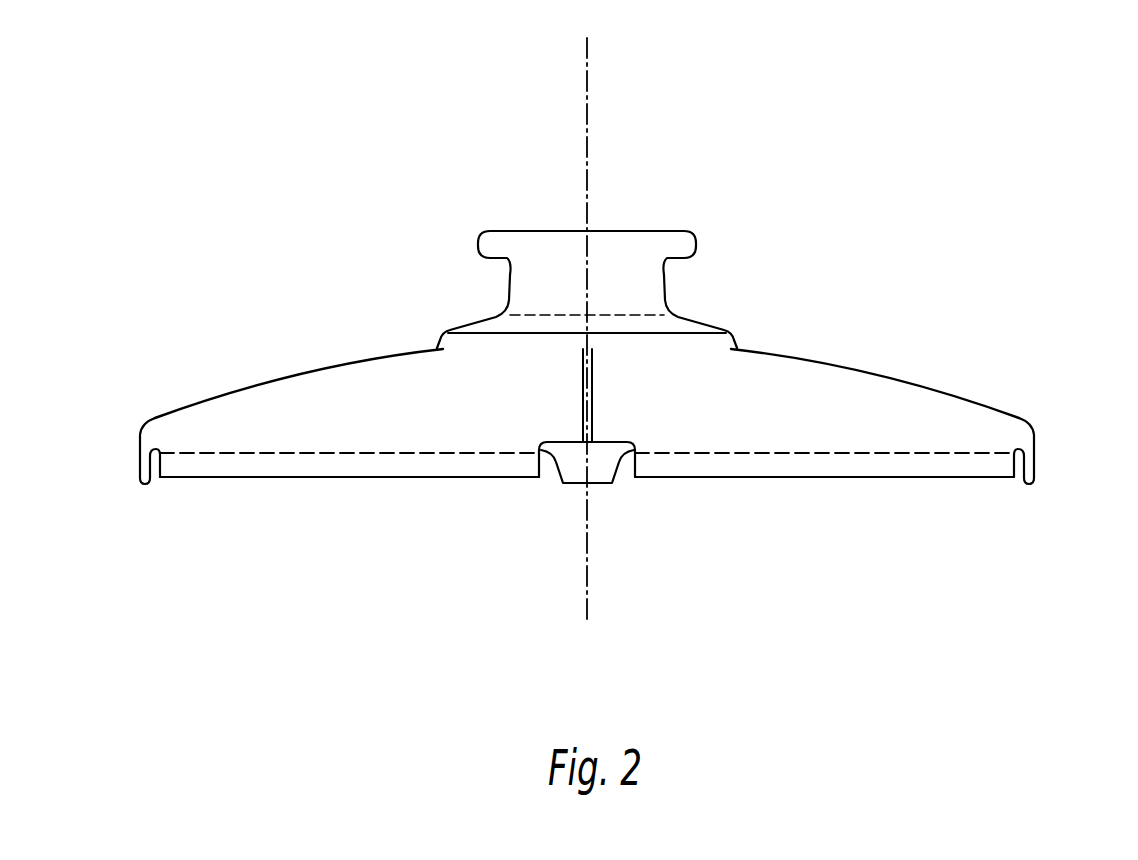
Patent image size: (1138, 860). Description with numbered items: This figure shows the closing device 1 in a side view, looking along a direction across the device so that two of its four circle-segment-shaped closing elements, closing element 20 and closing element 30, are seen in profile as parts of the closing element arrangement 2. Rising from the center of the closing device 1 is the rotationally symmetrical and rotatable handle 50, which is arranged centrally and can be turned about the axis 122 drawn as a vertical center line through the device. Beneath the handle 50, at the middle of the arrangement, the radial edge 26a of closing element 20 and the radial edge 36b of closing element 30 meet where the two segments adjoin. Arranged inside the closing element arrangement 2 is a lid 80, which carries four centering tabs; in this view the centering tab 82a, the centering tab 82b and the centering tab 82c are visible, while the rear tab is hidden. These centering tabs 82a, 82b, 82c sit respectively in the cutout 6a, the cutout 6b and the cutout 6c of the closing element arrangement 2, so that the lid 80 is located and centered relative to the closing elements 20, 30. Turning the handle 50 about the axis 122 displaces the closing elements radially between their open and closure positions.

The closing device 1 is at (898, 284).
The closing element arrangement 2 is at (930, 390).
The closing element 20 is at (970, 427).
The closing element 30 is at (326, 400).
The handle 50 is at (643, 283).
The axis 122 is at (588, 75).
The cutout 6a is at (1032, 448).
The cutout 6b is at (626, 467).
The cutout 6c is at (146, 446).
The centering tab 82a is at (1028, 463).
The centering tab 82b is at (599, 472).
The centering tab 82c is at (145, 468).
The radial edge 36b is at (583, 398).
The radial edge 26a is at (592, 397).
The lid 80 is at (565, 445).